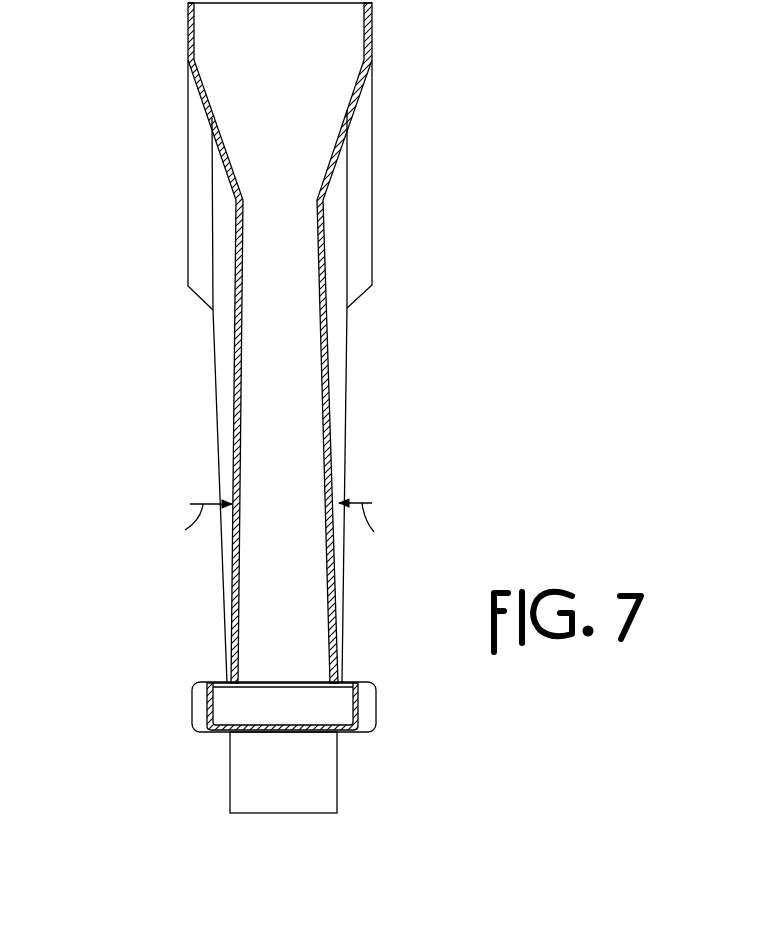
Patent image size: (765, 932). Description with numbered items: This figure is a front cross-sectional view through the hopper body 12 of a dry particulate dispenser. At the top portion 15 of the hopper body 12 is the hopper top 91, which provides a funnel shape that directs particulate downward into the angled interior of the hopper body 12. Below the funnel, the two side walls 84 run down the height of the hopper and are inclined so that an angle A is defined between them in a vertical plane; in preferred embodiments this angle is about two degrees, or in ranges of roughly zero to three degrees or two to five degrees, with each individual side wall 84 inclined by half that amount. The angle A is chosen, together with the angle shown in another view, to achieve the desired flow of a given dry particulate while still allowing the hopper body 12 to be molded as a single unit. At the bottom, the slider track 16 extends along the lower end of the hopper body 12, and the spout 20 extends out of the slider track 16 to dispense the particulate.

The top portion 15 is at (146, 51).
The hopper body 12 is at (215, 423).
The hopper top 91 is at (207, 117).
The side walls 84 is at (215, 342).
The slider track 16 is at (192, 708).
The spout 20 is at (338, 762).
The angle between side walls A is at (275, 536).